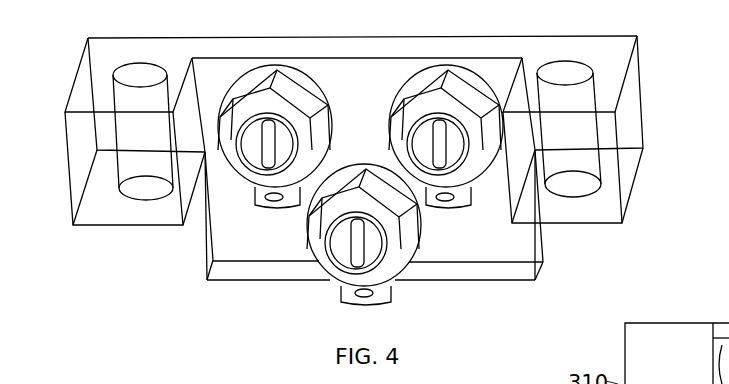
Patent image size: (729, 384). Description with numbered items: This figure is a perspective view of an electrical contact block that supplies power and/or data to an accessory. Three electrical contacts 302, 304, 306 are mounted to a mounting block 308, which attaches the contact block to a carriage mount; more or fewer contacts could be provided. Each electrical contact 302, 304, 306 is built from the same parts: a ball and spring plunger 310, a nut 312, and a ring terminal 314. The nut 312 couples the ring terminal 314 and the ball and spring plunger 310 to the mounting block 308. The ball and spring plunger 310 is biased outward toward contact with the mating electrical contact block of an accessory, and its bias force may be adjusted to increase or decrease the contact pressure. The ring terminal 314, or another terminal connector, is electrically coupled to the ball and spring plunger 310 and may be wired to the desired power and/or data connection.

The electrical contact 302 is at (226, 66).
The electrical contact 304 is at (425, 100).
The electrical contact 306 is at (428, 272).
The mounting block 308 is at (117, 42).
The ball and spring plunger 310 is at (404, 306).
The nut 312 is at (462, 90).
The ring terminal 314 is at (278, 208).